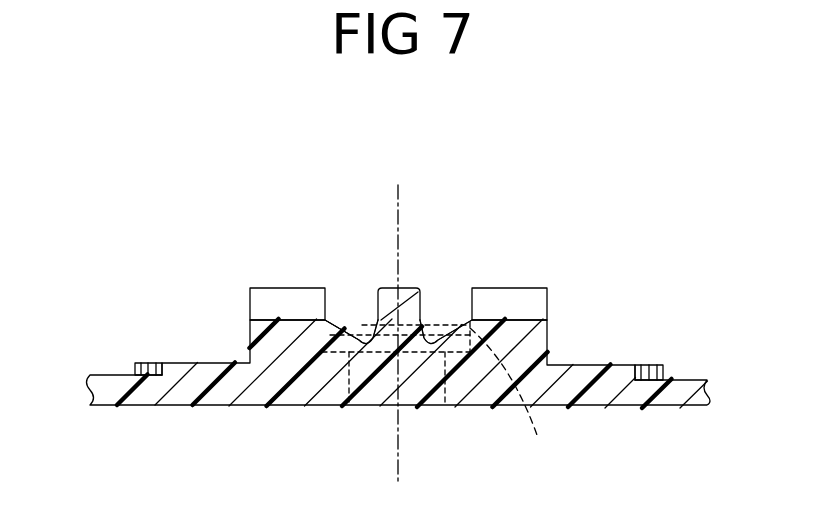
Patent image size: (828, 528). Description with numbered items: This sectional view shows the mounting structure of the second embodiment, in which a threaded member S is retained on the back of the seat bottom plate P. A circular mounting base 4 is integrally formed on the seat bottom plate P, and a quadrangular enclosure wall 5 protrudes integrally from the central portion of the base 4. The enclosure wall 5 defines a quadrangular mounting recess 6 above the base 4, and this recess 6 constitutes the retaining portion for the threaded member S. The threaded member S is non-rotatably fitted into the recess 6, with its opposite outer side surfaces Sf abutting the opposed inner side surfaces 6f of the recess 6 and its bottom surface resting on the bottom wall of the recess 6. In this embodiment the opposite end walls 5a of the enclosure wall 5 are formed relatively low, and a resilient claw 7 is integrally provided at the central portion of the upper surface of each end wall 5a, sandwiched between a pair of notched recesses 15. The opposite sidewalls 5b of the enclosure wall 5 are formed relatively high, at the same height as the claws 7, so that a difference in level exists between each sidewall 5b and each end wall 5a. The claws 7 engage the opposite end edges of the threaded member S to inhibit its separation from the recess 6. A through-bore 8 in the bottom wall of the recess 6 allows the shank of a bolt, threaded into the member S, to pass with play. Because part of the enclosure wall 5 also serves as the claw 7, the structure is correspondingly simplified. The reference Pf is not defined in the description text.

The mounting base 4 is at (620, 365).
The enclosure wall 5 is at (392, 298).
The end walls 5a is at (280, 320).
The sidewalls 5b is at (272, 287).
The mounting recess 6 is at (348, 334).
The inner side surfaces 6f is at (336, 326).
The resilient claw 7 is at (402, 288).
The through-bore 8 is at (378, 418).
The notched recess 15 is at (361, 340).
The threaded member S is at (460, 322).
The outer side surfaces Sf is at (524, 393).
The seat bottom plate P is at (146, 350).
The reference plane Pf is at (457, 407).